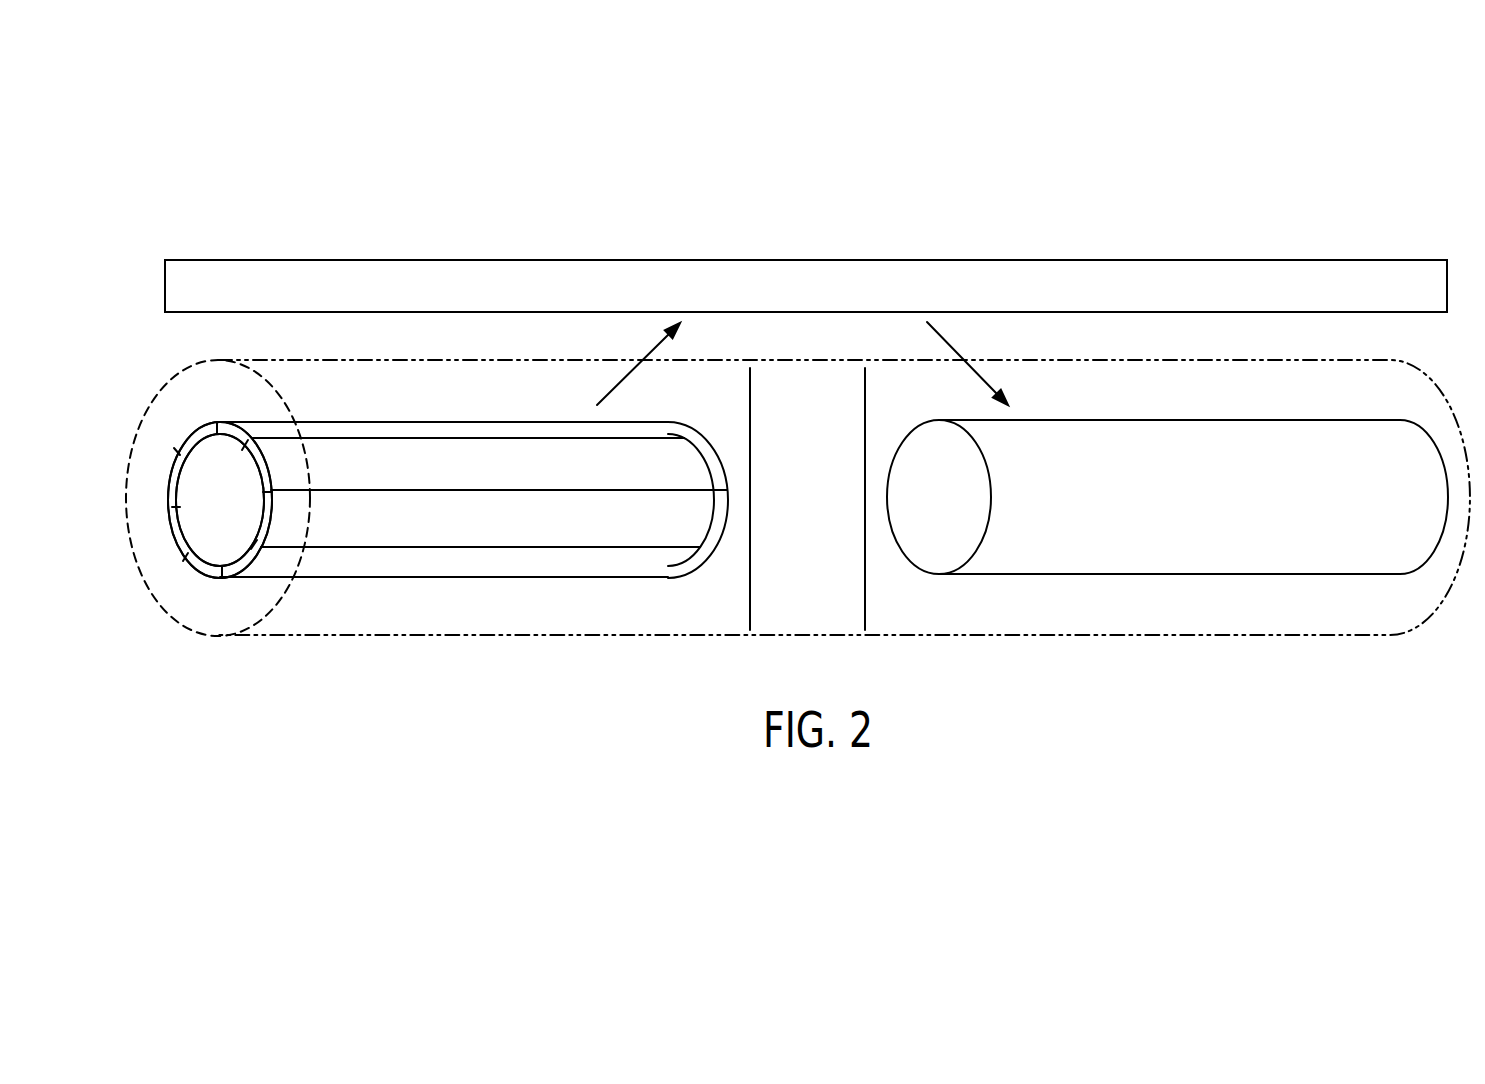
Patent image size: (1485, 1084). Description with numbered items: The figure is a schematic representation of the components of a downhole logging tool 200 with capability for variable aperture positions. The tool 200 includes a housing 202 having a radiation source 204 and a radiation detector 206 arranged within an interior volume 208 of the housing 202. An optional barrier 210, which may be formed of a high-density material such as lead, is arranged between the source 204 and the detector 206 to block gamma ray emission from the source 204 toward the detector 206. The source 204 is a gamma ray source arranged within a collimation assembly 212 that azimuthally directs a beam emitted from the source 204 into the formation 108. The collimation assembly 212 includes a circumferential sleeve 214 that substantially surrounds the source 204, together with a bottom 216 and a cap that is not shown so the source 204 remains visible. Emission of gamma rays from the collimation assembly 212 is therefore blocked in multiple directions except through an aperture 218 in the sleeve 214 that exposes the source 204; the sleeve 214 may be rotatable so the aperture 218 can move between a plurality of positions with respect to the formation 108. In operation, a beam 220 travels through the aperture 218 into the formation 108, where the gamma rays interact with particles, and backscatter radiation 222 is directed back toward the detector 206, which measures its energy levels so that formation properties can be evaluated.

The downhole logging tool 200 is at (142, 218).
The formation 108 is at (806, 260).
The housing 202 is at (585, 360).
The radiation source 204 is at (193, 527).
The radiation detector 206 is at (1206, 518).
The interior volume 208 is at (158, 442).
The barrier 210 is at (802, 617).
The collimation assembly 212 is at (478, 594).
The circumferential sleeve 214 is at (215, 575).
The bottom 216 is at (720, 590).
The aperture 218 is at (350, 452).
The beam 220 is at (632, 372).
The backscatter radiation 222 is at (965, 370).